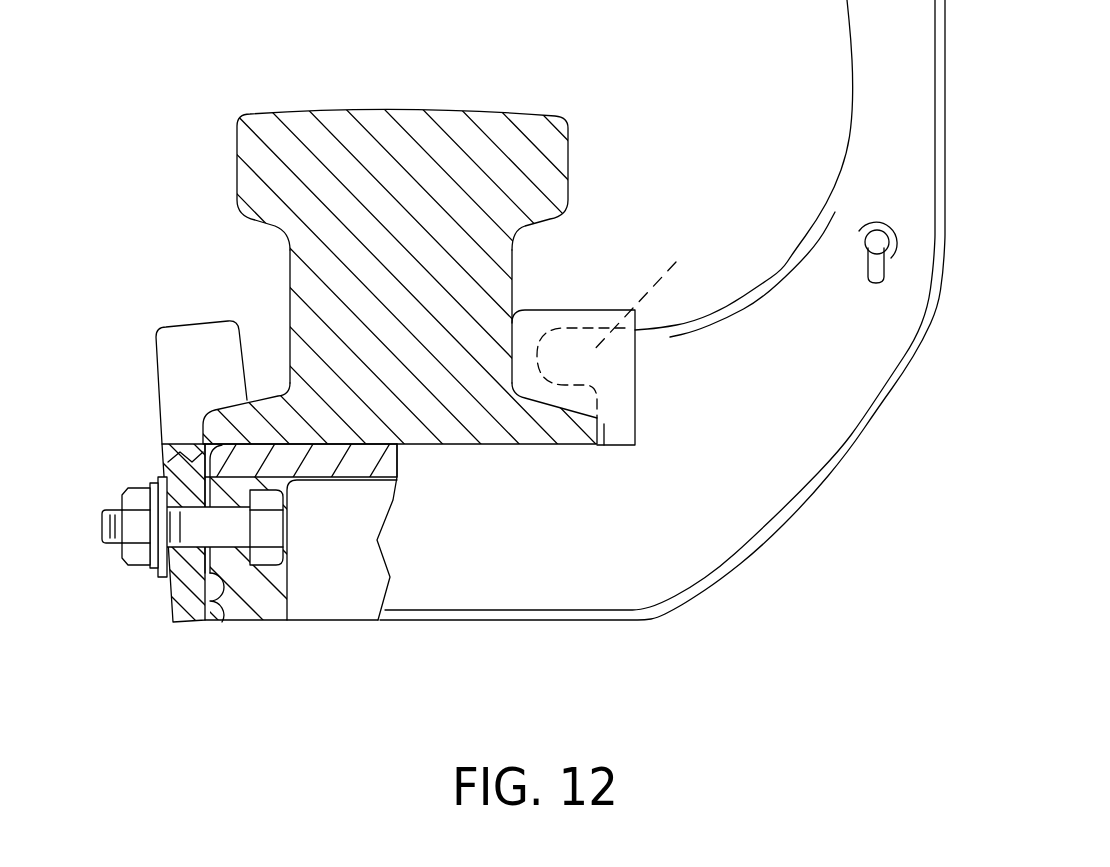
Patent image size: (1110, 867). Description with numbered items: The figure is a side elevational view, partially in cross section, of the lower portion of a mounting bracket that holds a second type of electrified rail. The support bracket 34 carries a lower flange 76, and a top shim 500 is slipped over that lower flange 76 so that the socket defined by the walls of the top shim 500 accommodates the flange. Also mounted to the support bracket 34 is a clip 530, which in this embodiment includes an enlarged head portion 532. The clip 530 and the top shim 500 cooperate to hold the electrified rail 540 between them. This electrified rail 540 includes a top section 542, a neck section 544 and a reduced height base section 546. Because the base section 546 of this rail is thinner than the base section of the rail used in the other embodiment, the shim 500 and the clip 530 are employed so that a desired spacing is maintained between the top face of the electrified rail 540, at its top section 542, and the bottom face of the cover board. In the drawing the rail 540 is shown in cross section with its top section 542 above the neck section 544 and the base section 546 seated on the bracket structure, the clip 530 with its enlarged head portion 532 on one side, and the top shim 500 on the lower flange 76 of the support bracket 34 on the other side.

The electrified rail 540 is at (440, 100).
The top section 542 is at (262, 157).
The neck section 544 is at (487, 273).
The reduced height base section 546 is at (470, 420).
The top shim 500 is at (534, 307).
The lower flange 76 is at (670, 293).
The support bracket 34 is at (849, 453).
The clip 530 is at (160, 378).
The enlarged head portion 532 is at (210, 360).